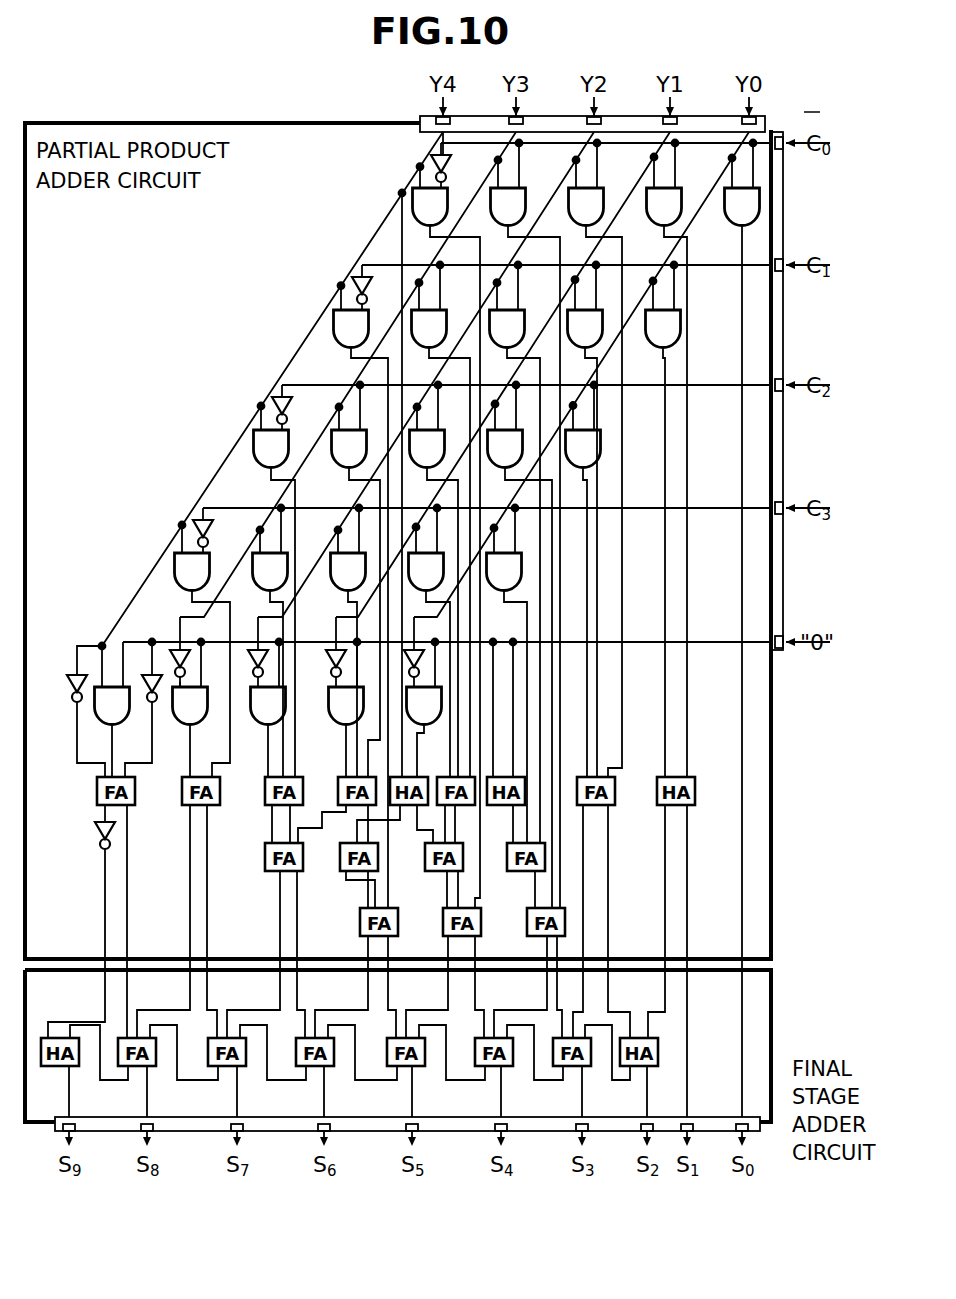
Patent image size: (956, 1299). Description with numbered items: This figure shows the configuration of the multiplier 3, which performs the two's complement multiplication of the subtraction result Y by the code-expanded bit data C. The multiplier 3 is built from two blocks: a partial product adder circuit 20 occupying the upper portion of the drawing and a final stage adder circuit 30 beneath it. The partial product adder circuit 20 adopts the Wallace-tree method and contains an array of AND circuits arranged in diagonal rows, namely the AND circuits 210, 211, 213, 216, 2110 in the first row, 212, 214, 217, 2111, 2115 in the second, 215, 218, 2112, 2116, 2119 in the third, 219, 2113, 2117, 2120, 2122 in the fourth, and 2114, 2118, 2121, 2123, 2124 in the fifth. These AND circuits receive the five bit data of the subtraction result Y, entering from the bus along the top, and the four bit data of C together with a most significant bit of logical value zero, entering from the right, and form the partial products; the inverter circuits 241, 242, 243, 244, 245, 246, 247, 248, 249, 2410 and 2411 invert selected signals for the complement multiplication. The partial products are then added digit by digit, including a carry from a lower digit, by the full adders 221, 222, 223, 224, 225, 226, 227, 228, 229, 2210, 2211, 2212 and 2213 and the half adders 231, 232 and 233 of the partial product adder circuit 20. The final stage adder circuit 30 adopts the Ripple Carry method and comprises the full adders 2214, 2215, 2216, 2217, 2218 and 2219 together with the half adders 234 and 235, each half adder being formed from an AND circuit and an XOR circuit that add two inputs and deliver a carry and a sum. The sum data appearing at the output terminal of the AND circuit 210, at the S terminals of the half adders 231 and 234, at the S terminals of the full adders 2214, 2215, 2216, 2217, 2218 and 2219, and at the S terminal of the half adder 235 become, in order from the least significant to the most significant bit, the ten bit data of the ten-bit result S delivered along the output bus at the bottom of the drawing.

The multiplier 3 is at (812, 100).
The partial product adder circuit 20 is at (774, 738).
The final stage adder circuit 30 is at (775, 1062).
The AND circuit 2110 is at (412, 206).
The AND circuit 216 is at (524, 195).
The AND circuit 213 is at (602, 195).
The AND circuit 211 is at (652, 225).
The AND circuit 210 is at (761, 208).
The AND circuit 2115 is at (332, 325).
The AND circuit 2111 is at (411, 300).
The AND circuit 217 is at (524, 316).
The AND circuit 214 is at (603, 340).
The AND circuit 212 is at (682, 332).
The AND circuit 2119 is at (252, 440).
The AND circuit 2116 is at (332, 442).
The AND circuit 2112 is at (410, 392).
The AND circuit 218 is at (524, 436).
The AND circuit 215 is at (603, 462).
The AND circuit 2122 is at (174, 573).
The AND circuit 2120 is at (258, 560).
The AND circuit 2117 is at (338, 560).
The AND circuit 2113 is at (445, 568).
The AND circuit 219 is at (525, 582).
The AND circuit 2124 is at (96, 722).
The AND circuit 2123 is at (183, 728).
The AND circuit 2121 is at (252, 708).
The AND circuit 2118 is at (330, 714).
The AND circuit 2114 is at (443, 702).
The inverter circuit 241 is at (432, 163).
The inverter circuit 242 is at (352, 284).
The inverter circuit 243 is at (270, 405).
The inverter circuit 244 is at (192, 527).
The inverter circuit 245 is at (143, 672).
The inverter circuit 246 is at (424, 655).
The inverter circuit 247 is at (329, 657).
The inverter circuit 248 is at (250, 657).
The inverter circuit 249 is at (172, 655).
The inverter circuit 2410 is at (70, 684).
The inverter circuit 2411 is at (98, 832).
The full adder 221 is at (607, 808).
The full adder 222 is at (525, 924).
The full adder 223 is at (522, 873).
The full adder 224 is at (441, 924).
The full adder 225 is at (437, 873).
The full adder 226 is at (474, 778).
The full adder 227 is at (358, 928).
The full adder 228 is at (376, 778).
The full adder 229 is at (352, 873).
The full adder 2210 is at (268, 807).
The full adder 2211 is at (272, 873).
The full adder 2212 is at (190, 810).
The full adder 2213 is at (130, 808).
The full adder 2214 is at (577, 1066).
The full adder 2215 is at (494, 1066).
The full adder 2216 is at (407, 1066).
The full adder 2217 is at (317, 1066).
The full adder 2218 is at (230, 1066).
The full adder 2219 is at (140, 1066).
The half adder 231 is at (688, 808).
The half adder 232 is at (524, 778).
The half adder 233 is at (428, 778).
The half adder 234 is at (652, 1066).
The half adder 235 is at (50, 1065).